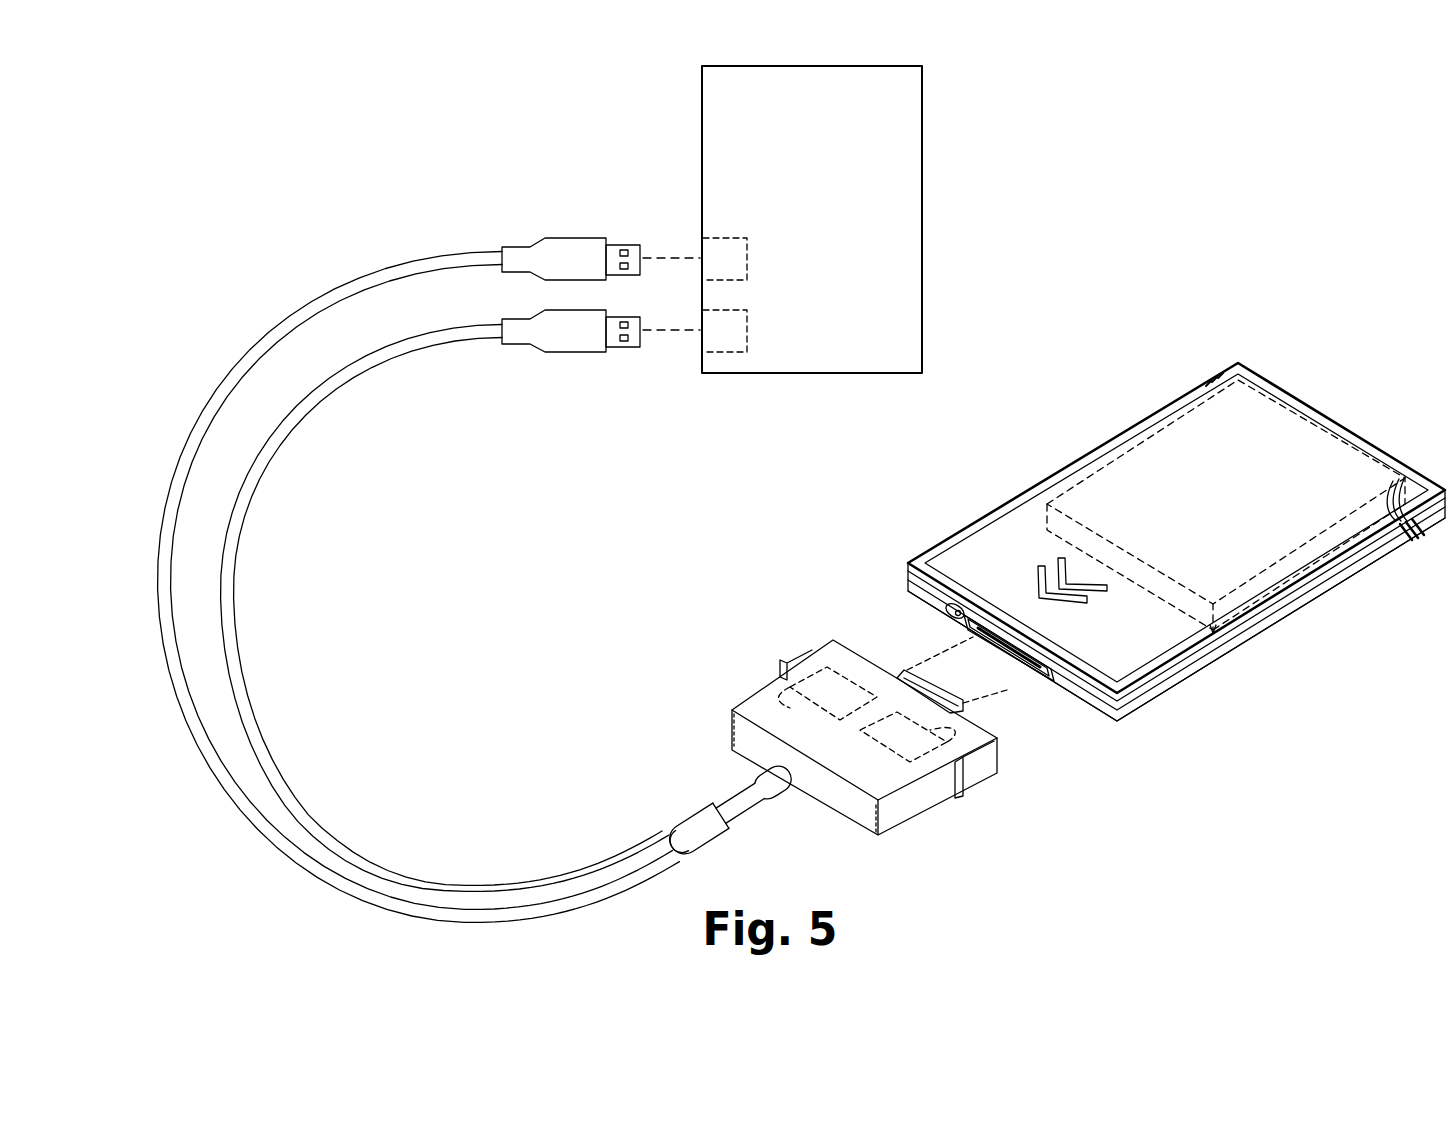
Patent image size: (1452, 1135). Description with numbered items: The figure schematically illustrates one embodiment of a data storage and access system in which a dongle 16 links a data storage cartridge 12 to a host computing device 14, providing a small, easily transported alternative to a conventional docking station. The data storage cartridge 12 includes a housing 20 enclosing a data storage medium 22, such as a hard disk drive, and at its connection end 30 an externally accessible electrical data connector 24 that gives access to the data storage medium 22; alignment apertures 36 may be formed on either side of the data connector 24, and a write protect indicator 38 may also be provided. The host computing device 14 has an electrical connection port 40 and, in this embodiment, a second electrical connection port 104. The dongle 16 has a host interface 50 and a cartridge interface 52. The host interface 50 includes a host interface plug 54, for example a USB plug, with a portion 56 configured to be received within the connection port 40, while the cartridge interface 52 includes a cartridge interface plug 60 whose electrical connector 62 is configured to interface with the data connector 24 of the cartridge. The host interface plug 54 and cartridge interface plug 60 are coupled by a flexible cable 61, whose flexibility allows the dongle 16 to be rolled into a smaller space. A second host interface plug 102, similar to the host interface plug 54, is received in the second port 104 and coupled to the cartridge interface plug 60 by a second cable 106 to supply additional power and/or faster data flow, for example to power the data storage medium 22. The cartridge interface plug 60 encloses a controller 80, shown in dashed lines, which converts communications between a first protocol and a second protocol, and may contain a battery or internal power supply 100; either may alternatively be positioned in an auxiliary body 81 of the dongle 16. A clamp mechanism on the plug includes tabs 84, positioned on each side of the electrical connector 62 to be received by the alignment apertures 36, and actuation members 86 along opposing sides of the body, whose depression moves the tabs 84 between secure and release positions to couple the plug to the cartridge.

The data storage cartridge 12 is at (1129, 576).
The host computing device 14 is at (922, 134).
The dongle 16 is at (384, 587).
The housing 20 is at (1123, 628).
The data storage medium 22 is at (1320, 540).
The electrical data connector 24 is at (960, 673).
The connection end 30 is at (1076, 672).
The alignment apertures 36 is at (964, 640).
The write protect indicator 38 is at (946, 606).
The electrical connection port 40 is at (727, 238).
The host interface 50 is at (548, 247).
The cartridge interface 52 is at (870, 734).
The host interface plug 54 is at (601, 231).
The portion 56 is at (633, 250).
The cartridge interface plug 60 is at (884, 776).
The flexible cable 61 is at (157, 564).
The electrical connector 62 is at (949, 694).
The controller 80 is at (962, 735).
The auxiliary body 81 is at (690, 810).
The tabs 84 is at (958, 674).
The actuation members 86 is at (795, 660).
The internal power supply 100 is at (782, 698).
The second host interface plug 102 is at (570, 342).
The second electrical connection port 104 is at (722, 352).
The second cable 106 is at (232, 573).